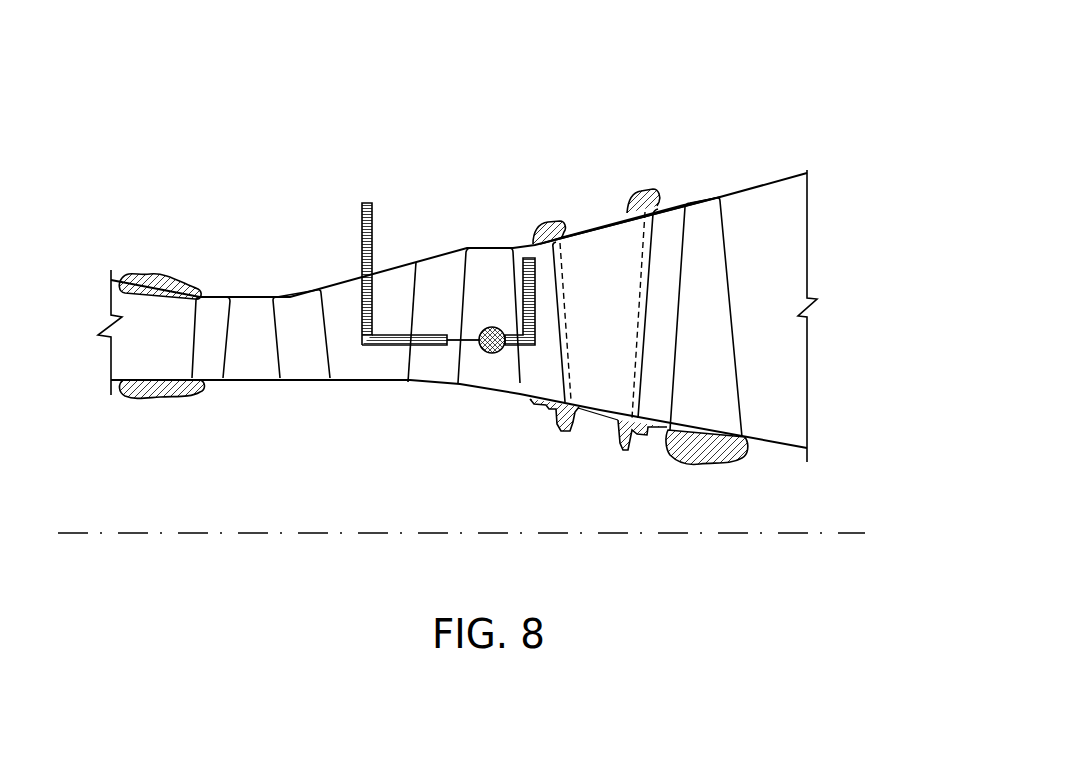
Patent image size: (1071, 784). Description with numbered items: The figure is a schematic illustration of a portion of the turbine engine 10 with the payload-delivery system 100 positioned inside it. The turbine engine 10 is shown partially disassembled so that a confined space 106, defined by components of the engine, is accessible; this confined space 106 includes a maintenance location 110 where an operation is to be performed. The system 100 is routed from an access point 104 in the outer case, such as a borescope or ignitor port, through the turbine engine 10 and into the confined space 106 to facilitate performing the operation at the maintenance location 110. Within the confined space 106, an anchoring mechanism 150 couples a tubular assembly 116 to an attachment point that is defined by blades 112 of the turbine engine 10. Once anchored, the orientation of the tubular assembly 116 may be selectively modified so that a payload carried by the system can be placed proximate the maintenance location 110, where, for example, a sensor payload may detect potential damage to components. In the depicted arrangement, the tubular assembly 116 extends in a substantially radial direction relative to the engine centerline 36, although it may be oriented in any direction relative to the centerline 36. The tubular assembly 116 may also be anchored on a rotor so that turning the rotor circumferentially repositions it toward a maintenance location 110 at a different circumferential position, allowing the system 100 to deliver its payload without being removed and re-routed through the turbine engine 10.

The turbine engine 10 is at (457, 317).
The centerline 36 is at (795, 535).
The system 100 is at (534, 302).
The access point 104 is at (345, 252).
The confined space 106 is at (541, 368).
The maintenance location 110 is at (525, 233).
The blades 112 is at (455, 370).
The tubular assembly 116 is at (395, 352).
The anchoring mechanism 150 is at (498, 353).